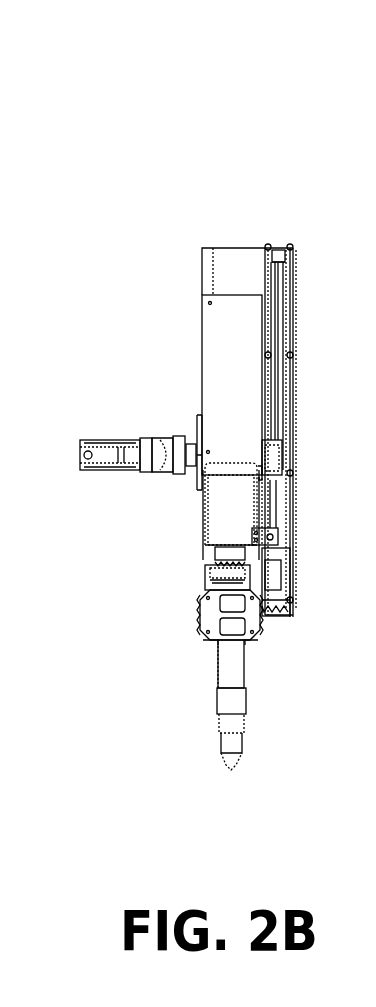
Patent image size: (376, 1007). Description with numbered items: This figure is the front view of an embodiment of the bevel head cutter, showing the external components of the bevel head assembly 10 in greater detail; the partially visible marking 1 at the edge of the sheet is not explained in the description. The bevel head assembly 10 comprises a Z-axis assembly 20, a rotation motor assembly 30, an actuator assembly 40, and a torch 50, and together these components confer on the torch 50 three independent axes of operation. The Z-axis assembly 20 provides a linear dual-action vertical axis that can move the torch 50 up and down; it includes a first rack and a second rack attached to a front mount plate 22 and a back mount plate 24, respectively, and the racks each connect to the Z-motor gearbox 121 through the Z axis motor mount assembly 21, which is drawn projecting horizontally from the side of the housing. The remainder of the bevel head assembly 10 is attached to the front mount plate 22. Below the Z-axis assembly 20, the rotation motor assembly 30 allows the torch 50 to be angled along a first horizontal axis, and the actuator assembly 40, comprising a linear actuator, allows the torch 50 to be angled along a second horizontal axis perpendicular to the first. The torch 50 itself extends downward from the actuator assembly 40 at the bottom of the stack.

The laser processing system 1 is at (8, 546).
The bevel head assembly 10 is at (0, 184).
The Z-axis assembly 20 is at (189, 384).
The Z axis motor mount assembly 21 is at (262, 474).
The front mount plate 22 is at (245, 390).
The back mount plate 24 is at (255, 285).
The rotation motor assembly 30 is at (245, 524).
The actuator assembly 40 is at (262, 643).
The torch 50 is at (218, 698).
The Z-motor gearbox 121 is at (138, 438).